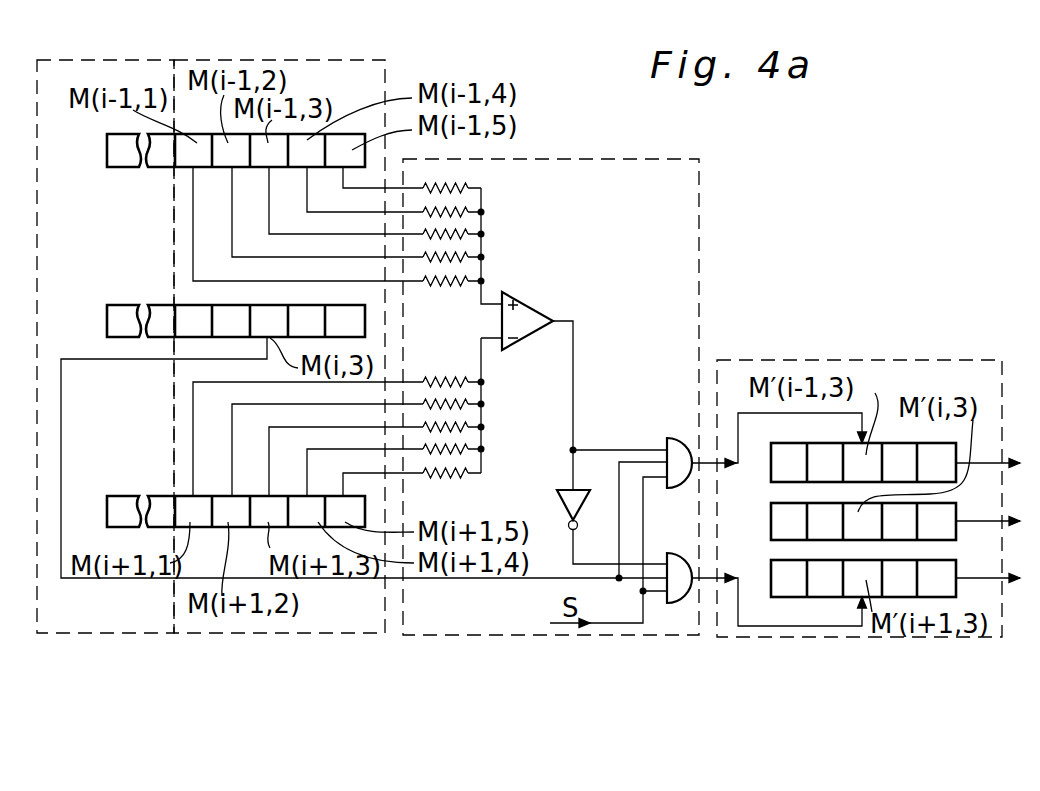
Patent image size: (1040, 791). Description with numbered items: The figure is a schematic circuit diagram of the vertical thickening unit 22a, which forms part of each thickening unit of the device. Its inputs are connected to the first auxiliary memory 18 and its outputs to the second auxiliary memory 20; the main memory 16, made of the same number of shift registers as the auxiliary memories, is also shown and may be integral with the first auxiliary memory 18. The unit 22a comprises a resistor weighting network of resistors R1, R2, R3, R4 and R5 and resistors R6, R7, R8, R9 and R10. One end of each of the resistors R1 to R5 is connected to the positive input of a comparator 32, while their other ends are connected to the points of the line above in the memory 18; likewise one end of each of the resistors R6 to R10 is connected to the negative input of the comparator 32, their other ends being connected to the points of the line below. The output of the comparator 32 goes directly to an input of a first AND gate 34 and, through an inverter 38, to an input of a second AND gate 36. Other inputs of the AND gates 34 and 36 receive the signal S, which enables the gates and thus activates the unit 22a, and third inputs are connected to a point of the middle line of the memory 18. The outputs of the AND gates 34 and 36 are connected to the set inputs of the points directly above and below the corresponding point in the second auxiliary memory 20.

The main memory 16 is at (80, 633).
The first auxiliary memory 18 is at (250, 633).
The second auxiliary memory 20 is at (820, 633).
The vertical thickening unit 22a is at (520, 633).
The comparator 32 is at (523, 320).
The first AND gate 34 is at (675, 450).
The second AND gate 36 is at (684, 562).
The inverter 38 is at (577, 500).
The resistor R1 is at (472, 202).
The resistor R2 is at (472, 234).
The resistor R3 is at (472, 256).
The resistor R4 is at (472, 281).
The resistor R5 is at (472, 306).
The resistor R6 is at (472, 376).
The resistor R7 is at (472, 398).
The resistor R8 is at (472, 420).
The resistor R9 is at (472, 442).
The resistor R10 is at (458, 484).